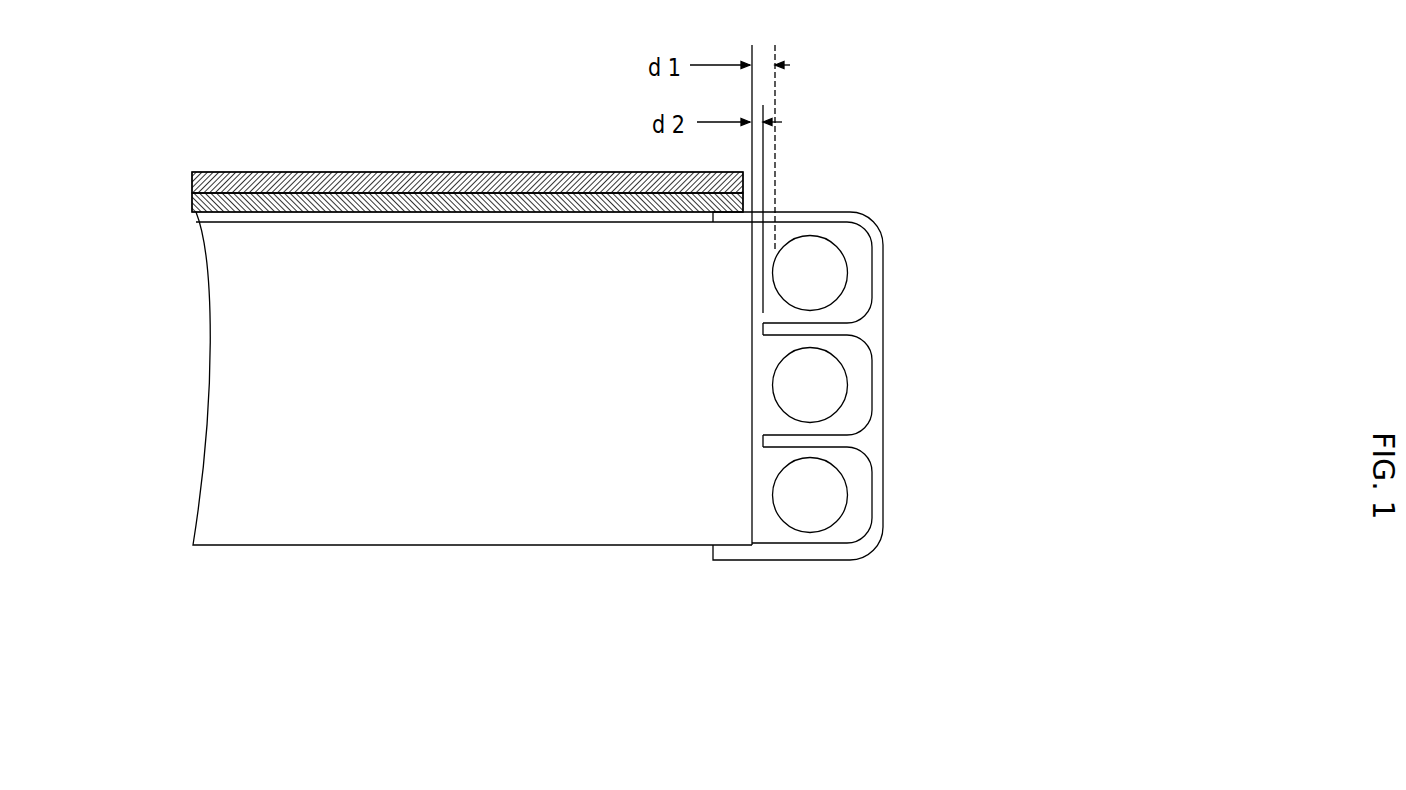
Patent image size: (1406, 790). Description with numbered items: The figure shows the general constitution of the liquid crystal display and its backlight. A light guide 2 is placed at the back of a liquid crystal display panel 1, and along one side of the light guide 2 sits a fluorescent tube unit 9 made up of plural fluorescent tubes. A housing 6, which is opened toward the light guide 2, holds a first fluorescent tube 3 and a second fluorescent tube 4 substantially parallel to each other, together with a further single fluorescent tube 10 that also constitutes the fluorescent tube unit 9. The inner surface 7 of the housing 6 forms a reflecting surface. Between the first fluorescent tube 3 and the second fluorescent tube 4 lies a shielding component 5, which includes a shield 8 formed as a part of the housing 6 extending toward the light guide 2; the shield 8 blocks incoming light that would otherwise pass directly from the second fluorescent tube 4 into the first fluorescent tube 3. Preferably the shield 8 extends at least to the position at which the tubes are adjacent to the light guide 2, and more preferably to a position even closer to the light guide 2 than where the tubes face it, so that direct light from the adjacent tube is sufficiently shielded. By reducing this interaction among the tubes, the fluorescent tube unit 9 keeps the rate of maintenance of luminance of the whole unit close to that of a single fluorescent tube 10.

The liquid crystal display panel 1 is at (257, 172).
The light guide 2 is at (263, 545).
The first fluorescent tube 3 is at (847, 493).
The second fluorescent tube 4 is at (847, 393).
The shielding component 5 is at (760, 455).
The housing 6 is at (877, 540).
The inner surface 7 is at (862, 515).
The shield 8 is at (770, 432).
The fluorescent tube unit 9 is at (873, 205).
The single fluorescent tube 10 is at (848, 268).